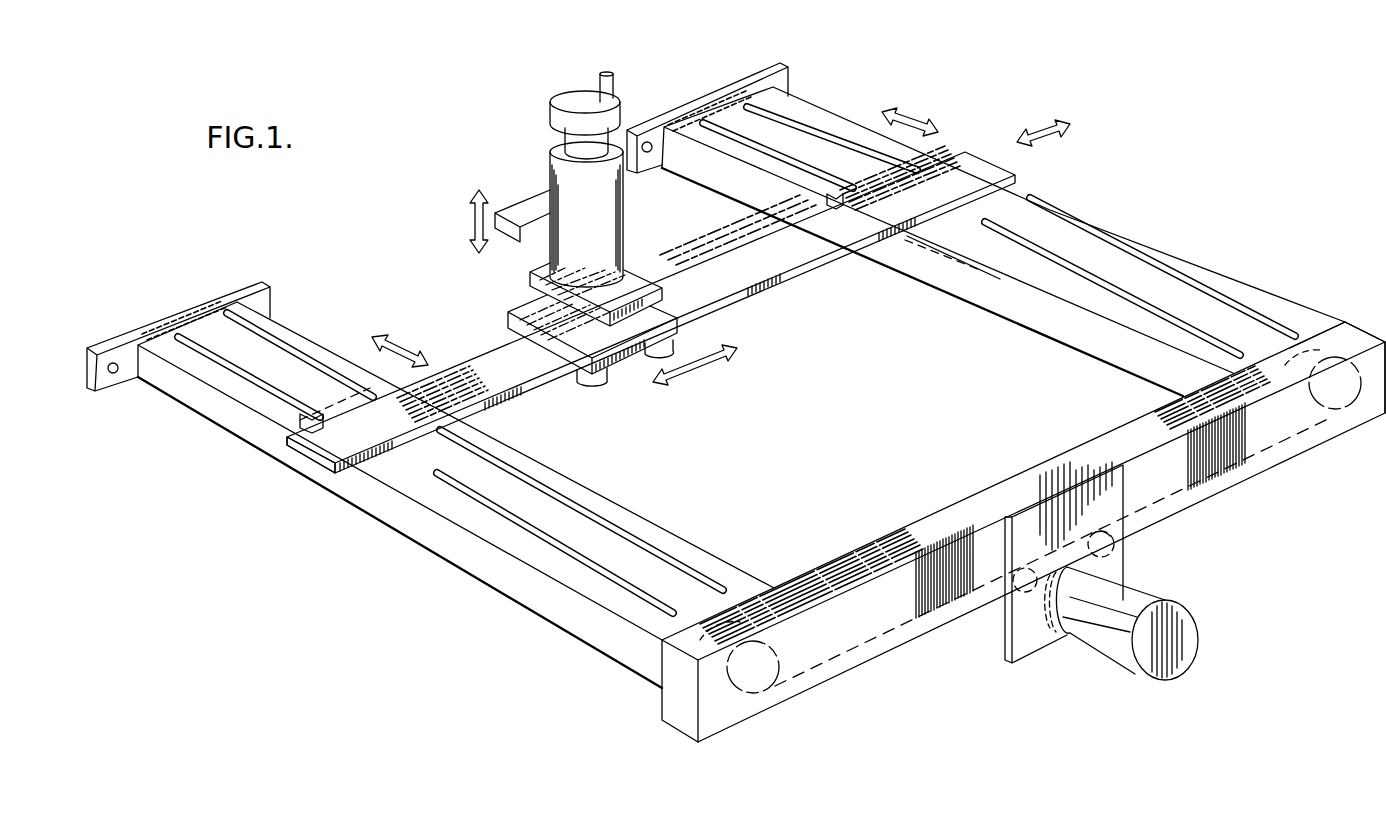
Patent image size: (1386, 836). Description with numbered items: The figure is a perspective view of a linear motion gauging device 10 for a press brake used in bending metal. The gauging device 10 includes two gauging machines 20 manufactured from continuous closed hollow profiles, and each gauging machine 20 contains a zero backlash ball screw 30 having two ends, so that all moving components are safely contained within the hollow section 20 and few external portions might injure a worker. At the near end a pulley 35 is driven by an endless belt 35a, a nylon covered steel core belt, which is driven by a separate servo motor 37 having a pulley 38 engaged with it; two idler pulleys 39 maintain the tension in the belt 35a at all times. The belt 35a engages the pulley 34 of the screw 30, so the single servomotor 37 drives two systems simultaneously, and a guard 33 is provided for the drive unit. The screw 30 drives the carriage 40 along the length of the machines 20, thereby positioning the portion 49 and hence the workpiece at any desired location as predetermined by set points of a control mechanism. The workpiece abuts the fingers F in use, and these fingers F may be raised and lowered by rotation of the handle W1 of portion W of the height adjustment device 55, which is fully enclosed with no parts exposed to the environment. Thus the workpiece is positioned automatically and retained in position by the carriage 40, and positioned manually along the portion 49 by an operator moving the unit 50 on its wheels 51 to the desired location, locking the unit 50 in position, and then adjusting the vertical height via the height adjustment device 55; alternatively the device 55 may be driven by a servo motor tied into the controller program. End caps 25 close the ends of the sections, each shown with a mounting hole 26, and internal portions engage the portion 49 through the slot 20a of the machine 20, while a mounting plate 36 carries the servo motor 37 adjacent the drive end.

The linear motion gauging device 10 is at (1143, 217).
The gauging machine 20 is at (490, 560).
The slot 20a is at (460, 500).
The end cap 25 is at (252, 280).
The mounting hole 26 is at (113, 363).
The zero backlash ball screw 30 is at (665, 632).
The guard 33 is at (668, 698).
The pulley 34 is at (1350, 413).
The pulley 35 is at (767, 693).
The endless belt 35a is at (885, 640).
The motor mounting plate 36 is at (1020, 600).
The servo motor 37 is at (1160, 657).
The pulley 38 is at (1047, 637).
The idler pulley 39 is at (1110, 547).
The carriage 40 is at (1007, 217).
The portion 49 is at (323, 442).
The unit 50 is at (603, 338).
The wheels 51 is at (687, 337).
The height adjustment device 55 is at (623, 214).
The fingers F is at (525, 215).
The portion W is at (562, 102).
The handle W1 is at (598, 90).